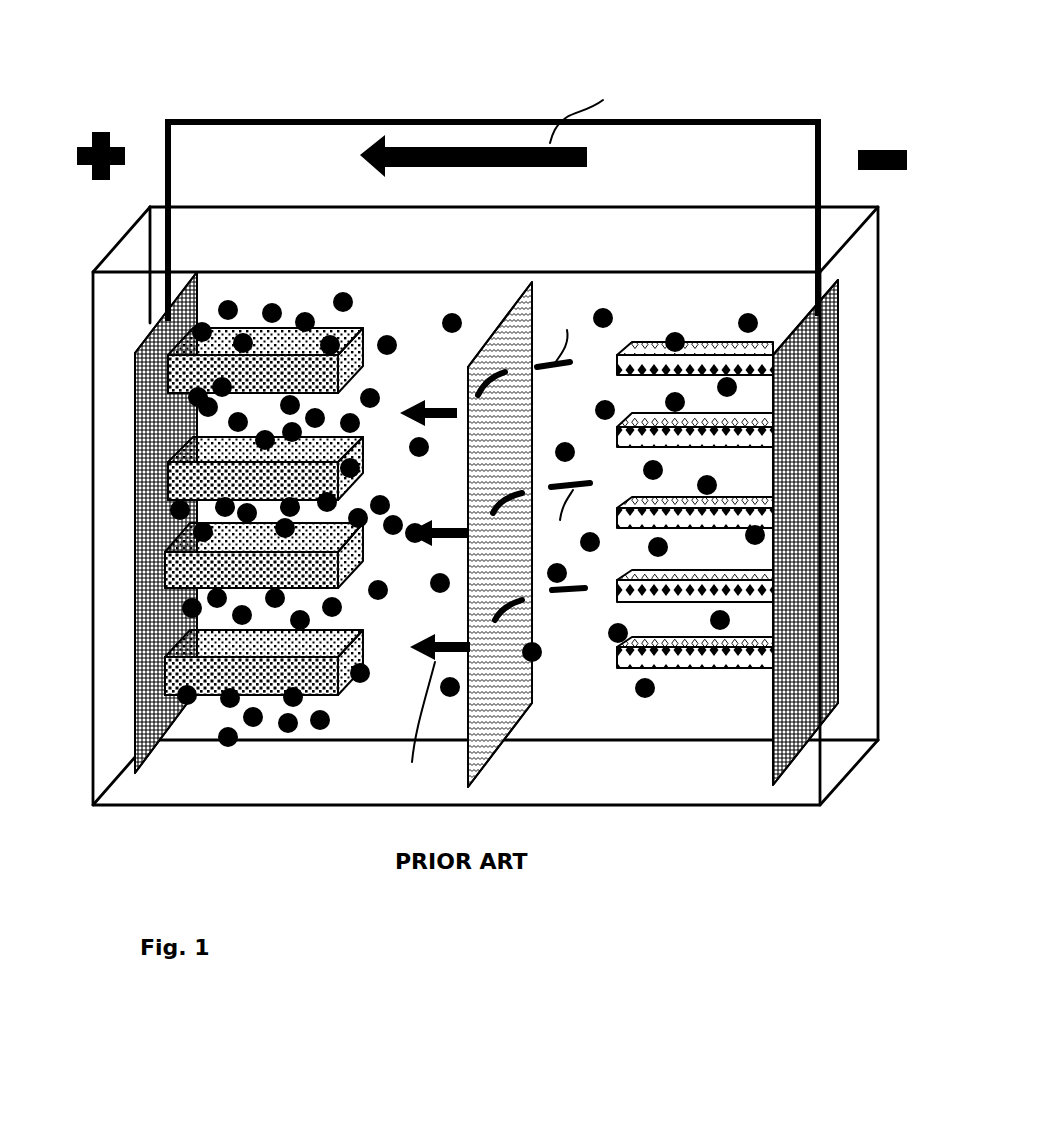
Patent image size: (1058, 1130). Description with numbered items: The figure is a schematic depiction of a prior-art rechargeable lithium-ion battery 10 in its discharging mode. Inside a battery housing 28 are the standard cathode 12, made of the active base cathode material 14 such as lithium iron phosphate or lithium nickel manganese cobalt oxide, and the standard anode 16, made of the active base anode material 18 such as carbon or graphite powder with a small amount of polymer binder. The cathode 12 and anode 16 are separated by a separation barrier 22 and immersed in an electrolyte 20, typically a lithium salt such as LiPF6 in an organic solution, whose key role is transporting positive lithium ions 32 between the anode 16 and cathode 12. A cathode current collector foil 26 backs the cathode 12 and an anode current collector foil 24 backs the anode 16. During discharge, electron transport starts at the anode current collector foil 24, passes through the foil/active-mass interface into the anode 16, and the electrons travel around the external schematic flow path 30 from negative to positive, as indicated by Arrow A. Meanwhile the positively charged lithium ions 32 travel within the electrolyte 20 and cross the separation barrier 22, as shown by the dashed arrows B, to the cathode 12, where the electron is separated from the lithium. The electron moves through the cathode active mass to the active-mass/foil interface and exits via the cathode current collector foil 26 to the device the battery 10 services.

The lithium-ion battery 10 is at (608, 855).
The standard cathode 12 is at (290, 318).
The active base cathode material 14 is at (358, 378).
The standard anode 16 is at (708, 328).
The active base anode material 18 is at (620, 365).
The electrolyte 20 is at (398, 287).
The separation barrier 22 is at (531, 303).
The anode current collector foil 24 is at (773, 622).
The cathode current collector foil 26 is at (150, 635).
The battery housing 28 is at (633, 207).
The schematic flow path 30 is at (742, 122).
The lithium ions 32 is at (387, 340).